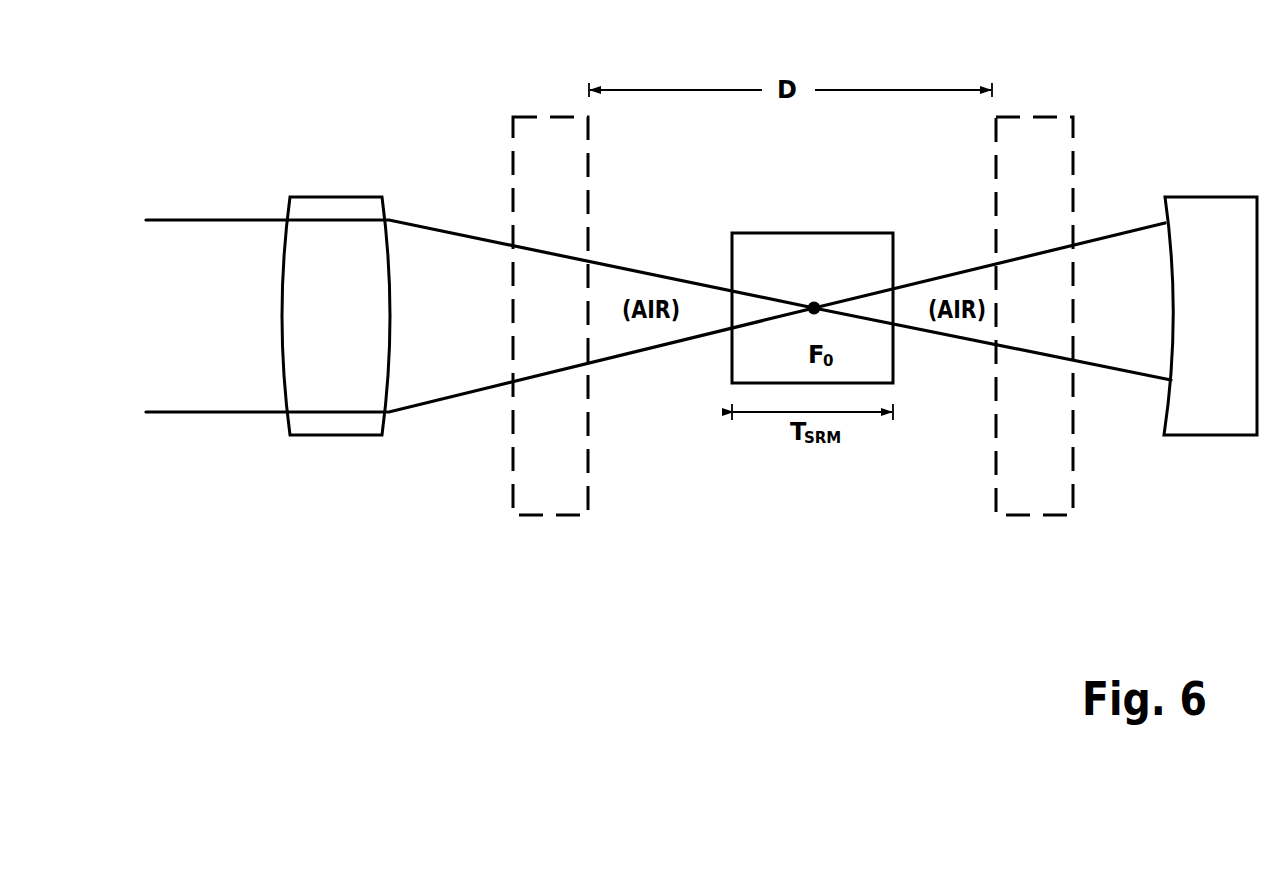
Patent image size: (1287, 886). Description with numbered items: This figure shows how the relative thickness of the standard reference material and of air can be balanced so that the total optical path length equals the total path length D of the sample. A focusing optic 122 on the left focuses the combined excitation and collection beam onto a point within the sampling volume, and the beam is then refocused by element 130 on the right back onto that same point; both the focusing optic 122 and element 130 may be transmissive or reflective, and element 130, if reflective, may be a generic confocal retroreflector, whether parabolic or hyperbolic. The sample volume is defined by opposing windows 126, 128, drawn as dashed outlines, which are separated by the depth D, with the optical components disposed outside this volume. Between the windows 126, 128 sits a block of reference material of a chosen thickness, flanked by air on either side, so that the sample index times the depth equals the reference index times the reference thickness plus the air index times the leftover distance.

The focusing optic 122 is at (322, 196).
The window 126 is at (540, 116).
The window 128 is at (1030, 116).
The refocusing element 130 is at (1207, 196).